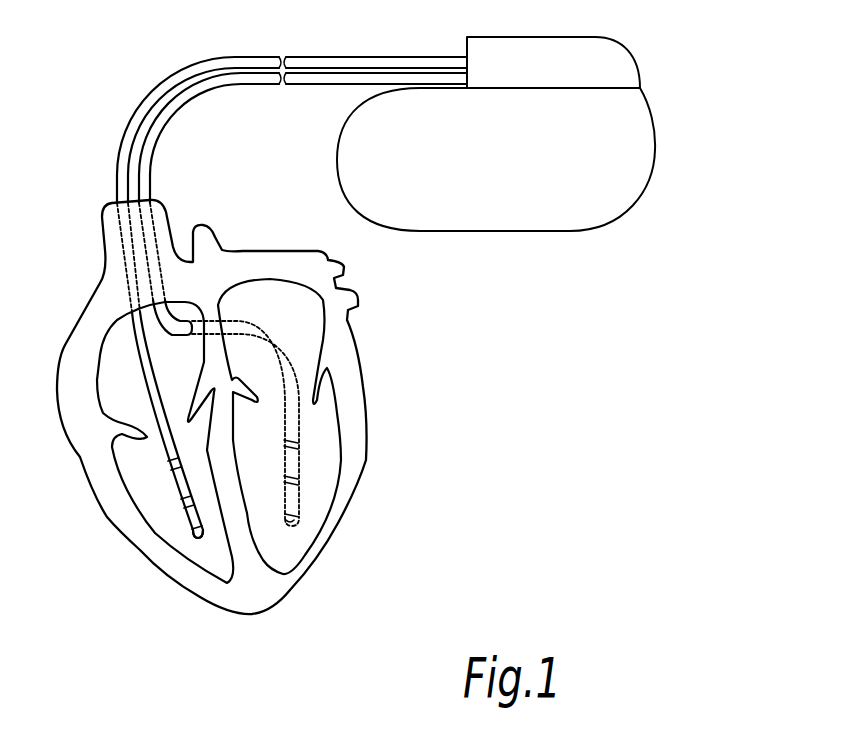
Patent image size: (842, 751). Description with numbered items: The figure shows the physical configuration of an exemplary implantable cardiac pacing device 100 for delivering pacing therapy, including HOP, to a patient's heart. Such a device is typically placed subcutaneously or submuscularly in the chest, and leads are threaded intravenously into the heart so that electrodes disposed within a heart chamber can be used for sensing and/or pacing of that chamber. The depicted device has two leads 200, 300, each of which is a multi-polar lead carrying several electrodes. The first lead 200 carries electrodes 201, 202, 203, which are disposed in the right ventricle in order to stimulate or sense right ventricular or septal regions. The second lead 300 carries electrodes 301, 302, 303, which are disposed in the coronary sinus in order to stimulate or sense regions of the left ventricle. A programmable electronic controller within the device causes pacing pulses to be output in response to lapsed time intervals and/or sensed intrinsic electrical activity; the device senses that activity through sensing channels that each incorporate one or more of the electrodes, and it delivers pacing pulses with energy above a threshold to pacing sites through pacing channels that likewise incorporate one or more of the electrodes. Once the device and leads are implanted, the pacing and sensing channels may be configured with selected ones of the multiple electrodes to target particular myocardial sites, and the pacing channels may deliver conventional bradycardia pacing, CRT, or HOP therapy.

The implantable cardiac pacing device 100 is at (620, 53).
The lead 200 is at (224, 57).
The electrode 201 is at (170, 461).
The electrode 202 is at (183, 498).
The electrode 203 is at (198, 537).
The lead 300 is at (258, 86).
The electrode 301 is at (290, 530).
The electrode 302 is at (298, 479).
The electrode 303 is at (297, 443).